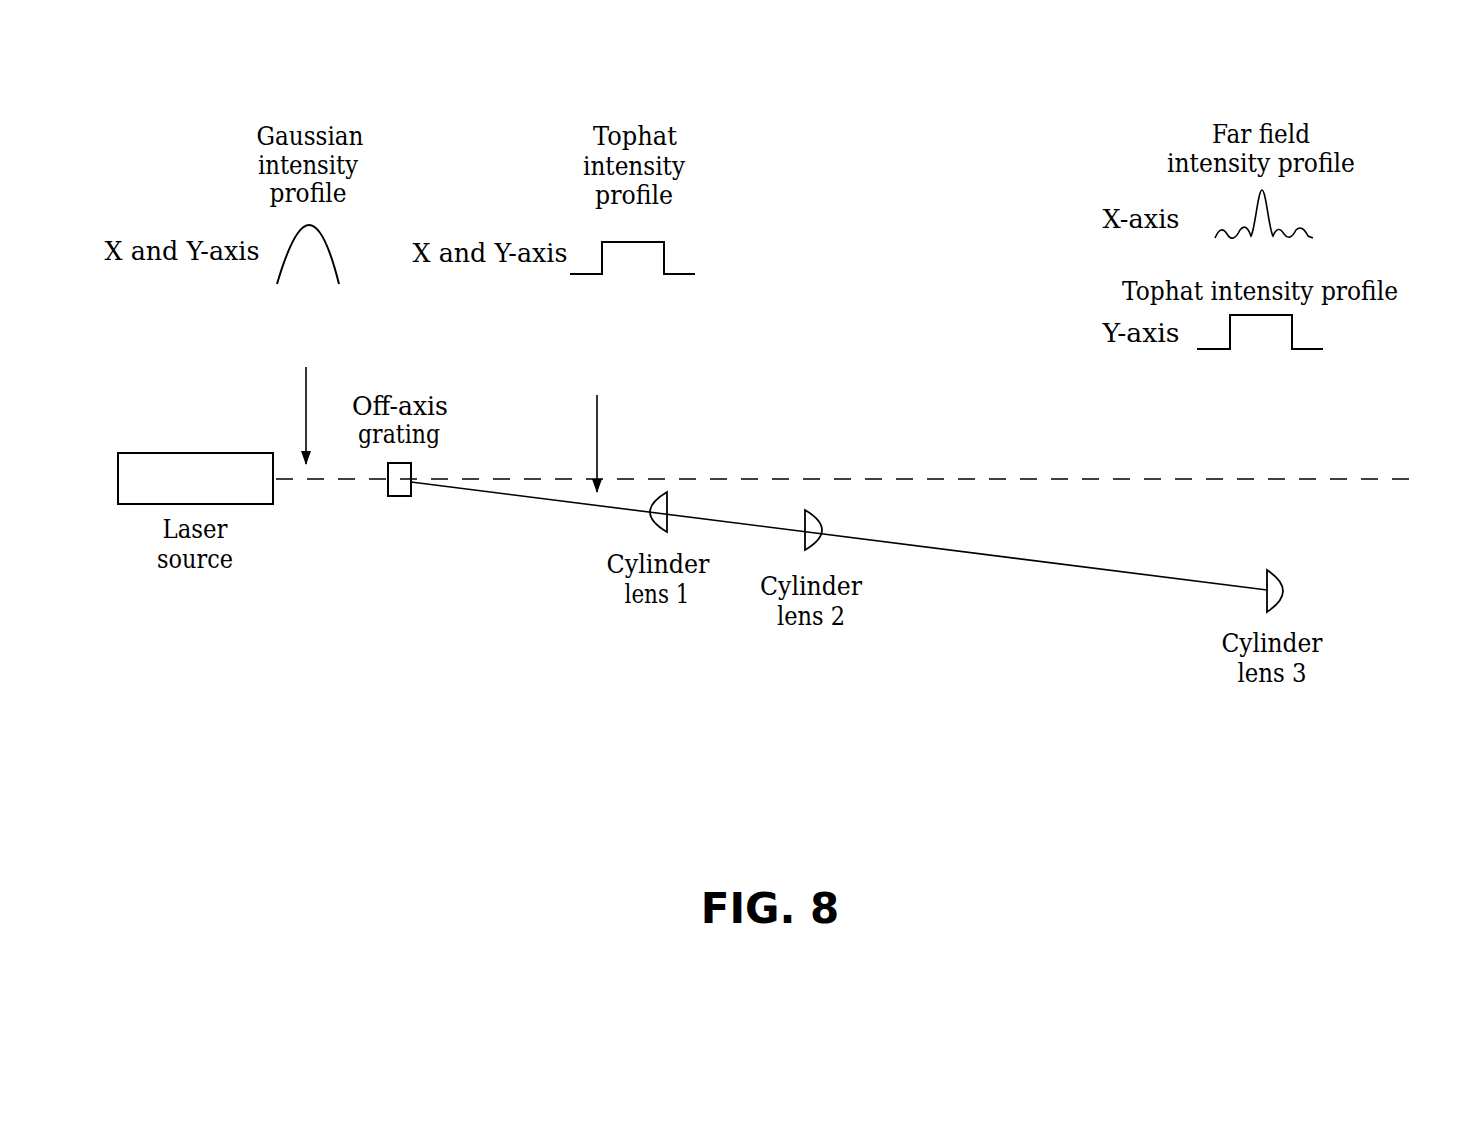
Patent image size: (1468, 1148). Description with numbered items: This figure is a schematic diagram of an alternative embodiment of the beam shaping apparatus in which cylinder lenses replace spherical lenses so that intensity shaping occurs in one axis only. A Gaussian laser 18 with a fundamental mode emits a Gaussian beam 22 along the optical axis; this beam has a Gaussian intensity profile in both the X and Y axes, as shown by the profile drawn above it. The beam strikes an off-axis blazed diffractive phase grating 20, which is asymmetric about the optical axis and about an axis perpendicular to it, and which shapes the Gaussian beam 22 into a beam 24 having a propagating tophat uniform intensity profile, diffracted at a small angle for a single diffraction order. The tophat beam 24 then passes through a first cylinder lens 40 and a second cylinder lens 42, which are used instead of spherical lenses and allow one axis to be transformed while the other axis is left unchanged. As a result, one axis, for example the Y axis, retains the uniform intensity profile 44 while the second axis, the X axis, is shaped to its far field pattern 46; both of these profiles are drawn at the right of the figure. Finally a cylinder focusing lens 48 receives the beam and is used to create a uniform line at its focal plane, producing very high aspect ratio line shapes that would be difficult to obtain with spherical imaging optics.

The Gaussian laser 18 is at (170, 453).
The off-axis blazed diffractive phase grating 20 is at (400, 497).
The Gaussian beam 22 is at (305, 399).
The beam with non-Gaussian intensity shape 24 is at (597, 425).
The cylinder lens 40 is at (650, 517).
The cylinder lens 42 is at (805, 545).
The uniform intensity profile 44 is at (1333, 332).
The far field pattern 46 is at (1325, 226).
The cylinder focusing lens 48 is at (1265, 597).